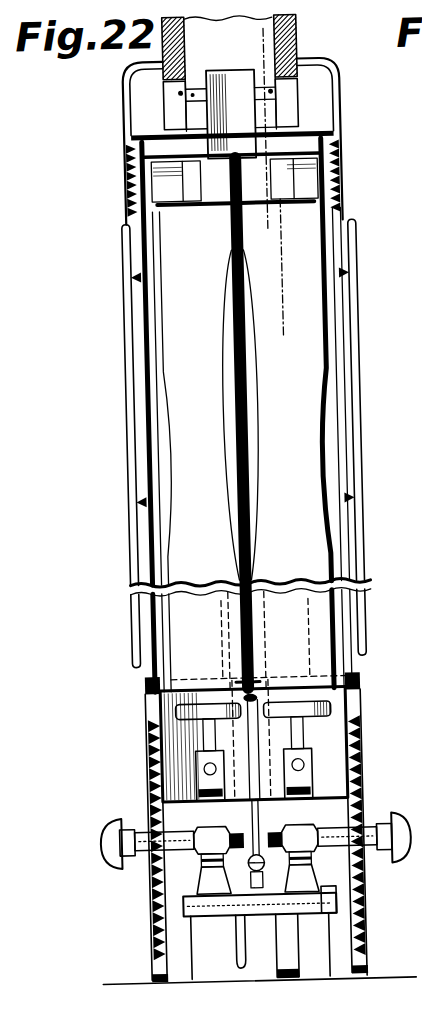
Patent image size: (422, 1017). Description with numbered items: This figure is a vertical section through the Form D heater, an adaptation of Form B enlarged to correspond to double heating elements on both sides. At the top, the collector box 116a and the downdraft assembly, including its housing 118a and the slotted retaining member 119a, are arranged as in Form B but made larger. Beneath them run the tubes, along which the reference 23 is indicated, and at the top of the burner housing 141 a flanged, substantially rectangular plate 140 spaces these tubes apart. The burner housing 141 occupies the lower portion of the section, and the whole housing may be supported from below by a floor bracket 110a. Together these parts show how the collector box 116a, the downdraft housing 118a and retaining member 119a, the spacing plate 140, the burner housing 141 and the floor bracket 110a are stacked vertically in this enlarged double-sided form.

The tube stem 23 is at (275, 29).
The collector box 116a is at (319, 178).
The housing 118a is at (290, 127).
The slotted retaining member 119a is at (150, 126).
The flanged substantially rectangular plate 140 is at (151, 686).
The burner housing 141 is at (327, 757).
The floor bracket 110a is at (266, 967).